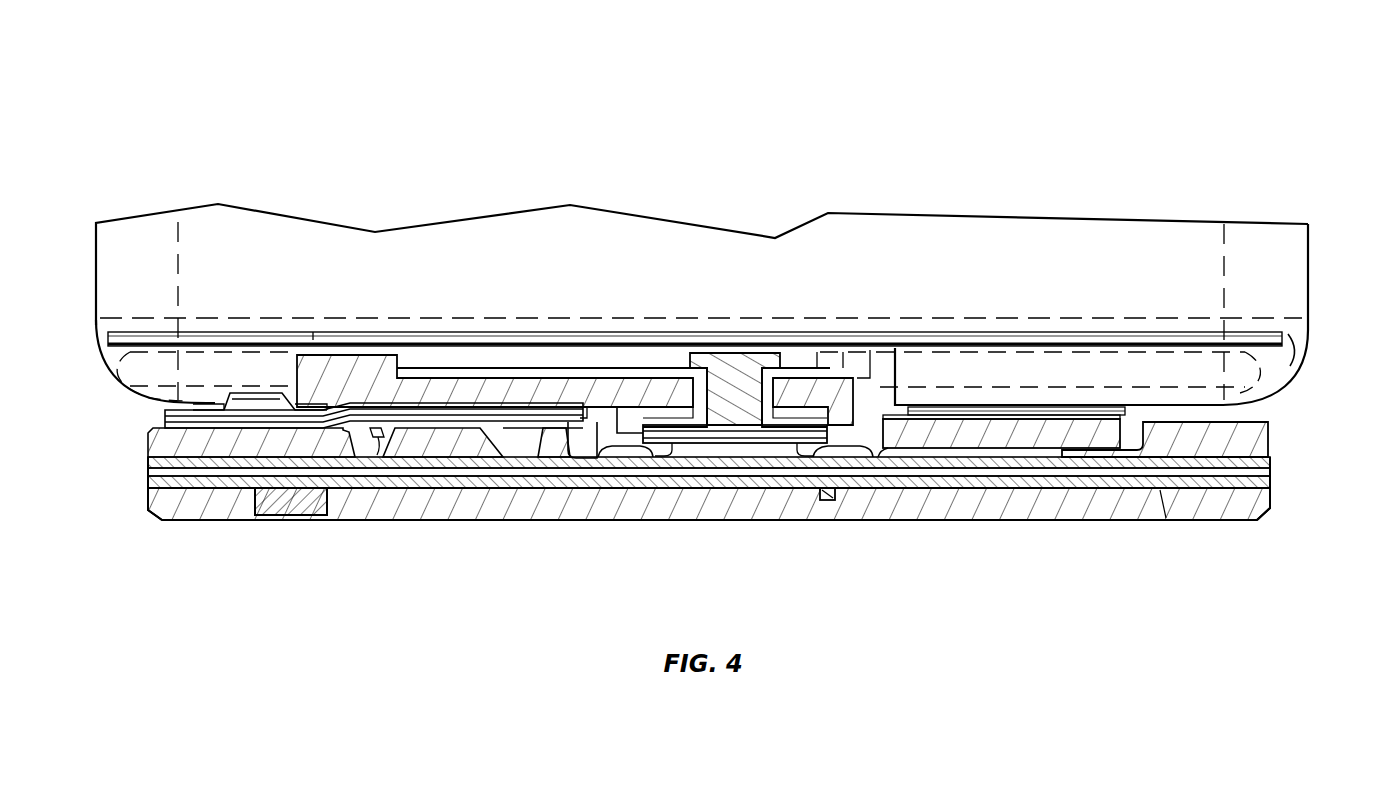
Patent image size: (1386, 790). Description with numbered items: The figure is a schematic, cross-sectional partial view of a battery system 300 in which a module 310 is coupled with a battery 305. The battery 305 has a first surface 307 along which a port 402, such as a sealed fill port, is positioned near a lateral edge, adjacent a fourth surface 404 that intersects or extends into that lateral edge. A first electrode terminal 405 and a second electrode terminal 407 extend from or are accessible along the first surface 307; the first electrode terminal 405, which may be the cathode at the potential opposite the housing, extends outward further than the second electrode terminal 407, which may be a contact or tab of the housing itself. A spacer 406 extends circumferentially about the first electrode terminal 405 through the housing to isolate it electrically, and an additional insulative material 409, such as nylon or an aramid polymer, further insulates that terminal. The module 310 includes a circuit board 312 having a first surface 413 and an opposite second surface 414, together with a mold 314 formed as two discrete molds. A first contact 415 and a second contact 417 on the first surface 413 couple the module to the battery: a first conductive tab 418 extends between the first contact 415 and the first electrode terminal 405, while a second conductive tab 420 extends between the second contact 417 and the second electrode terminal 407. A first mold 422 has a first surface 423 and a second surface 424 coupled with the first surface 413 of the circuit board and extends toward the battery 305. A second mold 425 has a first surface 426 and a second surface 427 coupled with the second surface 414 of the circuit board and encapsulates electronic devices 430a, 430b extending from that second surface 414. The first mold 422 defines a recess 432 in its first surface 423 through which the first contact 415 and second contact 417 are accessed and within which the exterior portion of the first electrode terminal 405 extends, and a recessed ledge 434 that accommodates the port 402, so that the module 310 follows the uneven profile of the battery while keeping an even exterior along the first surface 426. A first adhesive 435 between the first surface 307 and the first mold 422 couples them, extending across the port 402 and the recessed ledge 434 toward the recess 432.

The electronic device 300 is at (284, 128).
The fourth surface 404 is at (96, 275).
The battery 305 is at (1308, 285).
The first surface 307 is at (1187, 407).
The port 402 is at (255, 393).
The first surface 413 is at (148, 437).
The recessed ledge 434 is at (376, 448).
The first adhesive 435 is at (462, 392).
The additional material 409 is at (598, 412).
The spacer 406 is at (648, 403).
The first electrode terminal 405 is at (720, 353).
The first conductive tab 418 is at (760, 460).
The first contact 415 is at (705, 458).
The second electrode terminal 407 is at (1000, 408).
The second conductive tab 420 is at (1053, 408).
The first surface 423 is at (1180, 422).
The first mold 422 is at (1282, 445).
The first surface 426 is at (445, 520).
The second mold 425 is at (390, 520).
The second surface 427 is at (370, 505).
The module 310 is at (625, 520).
The circuit board 312 is at (555, 520).
The mold 314 is at (1040, 520).
The second contact 417 is at (950, 488).
The second surface 414 is at (148, 495).
The second surface 424 is at (1275, 490).
The recess 432 is at (1163, 520).
The electronic device 430a is at (250, 505).
The electronic device 430b is at (825, 500).